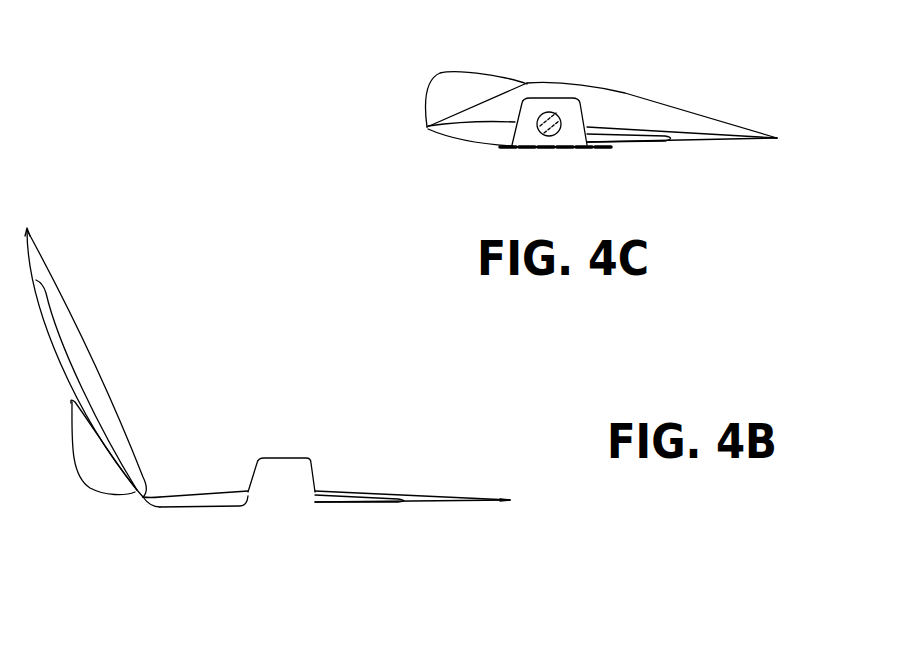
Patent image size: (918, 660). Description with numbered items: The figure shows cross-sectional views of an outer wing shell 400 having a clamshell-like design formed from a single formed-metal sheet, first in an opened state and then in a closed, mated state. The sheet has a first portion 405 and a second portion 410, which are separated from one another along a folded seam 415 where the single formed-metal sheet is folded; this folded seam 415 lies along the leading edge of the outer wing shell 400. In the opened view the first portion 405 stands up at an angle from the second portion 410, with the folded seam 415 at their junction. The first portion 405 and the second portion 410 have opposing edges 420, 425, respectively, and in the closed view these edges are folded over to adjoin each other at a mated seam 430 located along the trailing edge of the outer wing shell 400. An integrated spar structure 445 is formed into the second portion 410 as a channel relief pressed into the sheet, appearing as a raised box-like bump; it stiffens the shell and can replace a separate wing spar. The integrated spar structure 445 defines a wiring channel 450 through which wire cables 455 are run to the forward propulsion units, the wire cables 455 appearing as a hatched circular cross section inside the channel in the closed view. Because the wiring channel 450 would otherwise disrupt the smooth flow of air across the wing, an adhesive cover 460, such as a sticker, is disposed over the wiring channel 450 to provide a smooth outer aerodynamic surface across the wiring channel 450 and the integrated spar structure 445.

In FIG. 4B, the outer wing shell 400 is at (277, 332).
In FIG. 4C, the outer wing shell 400 is at (722, 65).
In FIG. 4B, the first portion 405 is at (118, 334).
In FIG. 4B, the second portion 410 is at (382, 452).
In FIG. 4B, the folded seam 415 is at (143, 497).
In FIG. 4C, the folded seam 415 is at (427, 127).
In FIG. 4B, the opposing edge of first portion 420 is at (27, 230).
In FIG. 4B, the opposing edge of second portion 425 is at (510, 500).
In FIG. 4C, the mated seam 430 is at (777, 138).
In FIG. 4B, the integrated spar structure 445 is at (277, 458).
In FIG. 4B, the wiring channel 450 is at (287, 488).
In FIG. 4C, the wiring channel 450 is at (567, 115).
In FIG. 4C, the wire cables 455 is at (556, 134).
In FIG. 4C, the adhesive cover 460 is at (527, 149).